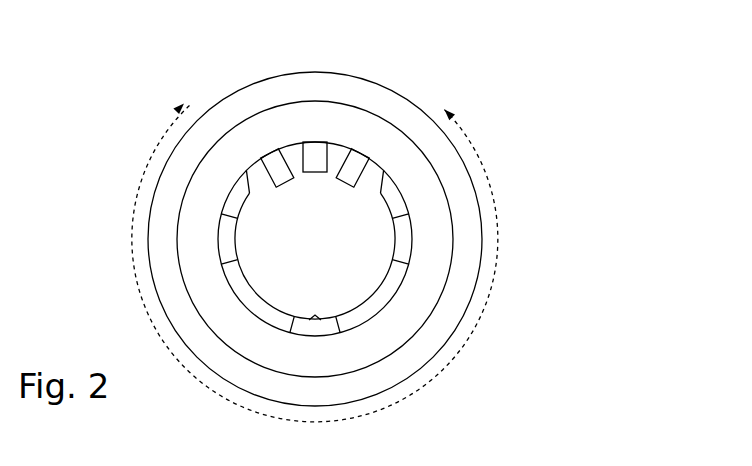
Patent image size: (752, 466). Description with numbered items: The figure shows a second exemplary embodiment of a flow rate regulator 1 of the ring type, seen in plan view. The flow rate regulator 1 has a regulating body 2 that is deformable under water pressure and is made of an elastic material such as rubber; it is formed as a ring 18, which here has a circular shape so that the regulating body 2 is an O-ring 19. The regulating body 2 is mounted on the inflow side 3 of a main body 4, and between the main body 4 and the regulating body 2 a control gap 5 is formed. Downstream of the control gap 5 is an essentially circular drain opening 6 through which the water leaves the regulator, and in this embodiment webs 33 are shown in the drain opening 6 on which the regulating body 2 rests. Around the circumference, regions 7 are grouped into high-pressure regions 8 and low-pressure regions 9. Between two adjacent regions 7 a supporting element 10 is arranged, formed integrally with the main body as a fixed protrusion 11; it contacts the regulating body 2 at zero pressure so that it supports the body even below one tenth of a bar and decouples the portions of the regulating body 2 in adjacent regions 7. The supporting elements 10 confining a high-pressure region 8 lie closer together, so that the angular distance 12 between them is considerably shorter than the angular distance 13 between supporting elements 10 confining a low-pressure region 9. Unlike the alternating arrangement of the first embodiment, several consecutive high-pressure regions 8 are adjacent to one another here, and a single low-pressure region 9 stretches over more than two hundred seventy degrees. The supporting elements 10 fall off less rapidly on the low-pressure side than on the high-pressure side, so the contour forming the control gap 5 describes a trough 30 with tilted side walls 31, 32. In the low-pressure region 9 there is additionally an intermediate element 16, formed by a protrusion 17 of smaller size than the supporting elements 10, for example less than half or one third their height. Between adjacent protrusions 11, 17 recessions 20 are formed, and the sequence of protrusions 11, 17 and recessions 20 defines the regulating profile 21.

The flow rate regulator 1 is at (567, 183).
The regulating body 2 is at (407, 335).
The inflow side 3 is at (367, 340).
The main body 4 is at (308, 255).
The control gap 5 is at (235, 191).
The drain opening 6 is at (236, 290).
The regions 7 is at (260, 145).
The high-pressure region 8 is at (278, 149).
The low-pressure region 9 is at (294, 316).
The supporting element 10 is at (262, 148).
The fixed protrusion 11 is at (298, 133).
The distance 12 is at (264, 166).
The distance 13 is at (498, 233).
The intermediate element 16 is at (315, 316).
The protrusion 17 is at (307, 335).
The ring 18 is at (197, 210).
The O-ring 19 is at (207, 272).
The recession 20 is at (410, 230).
The regulating profile 21 is at (390, 270).
The trough 30 is at (348, 335).
The tilted side wall 31 is at (383, 177).
The tilted side wall 32 is at (248, 178).
The web 33 is at (237, 240).